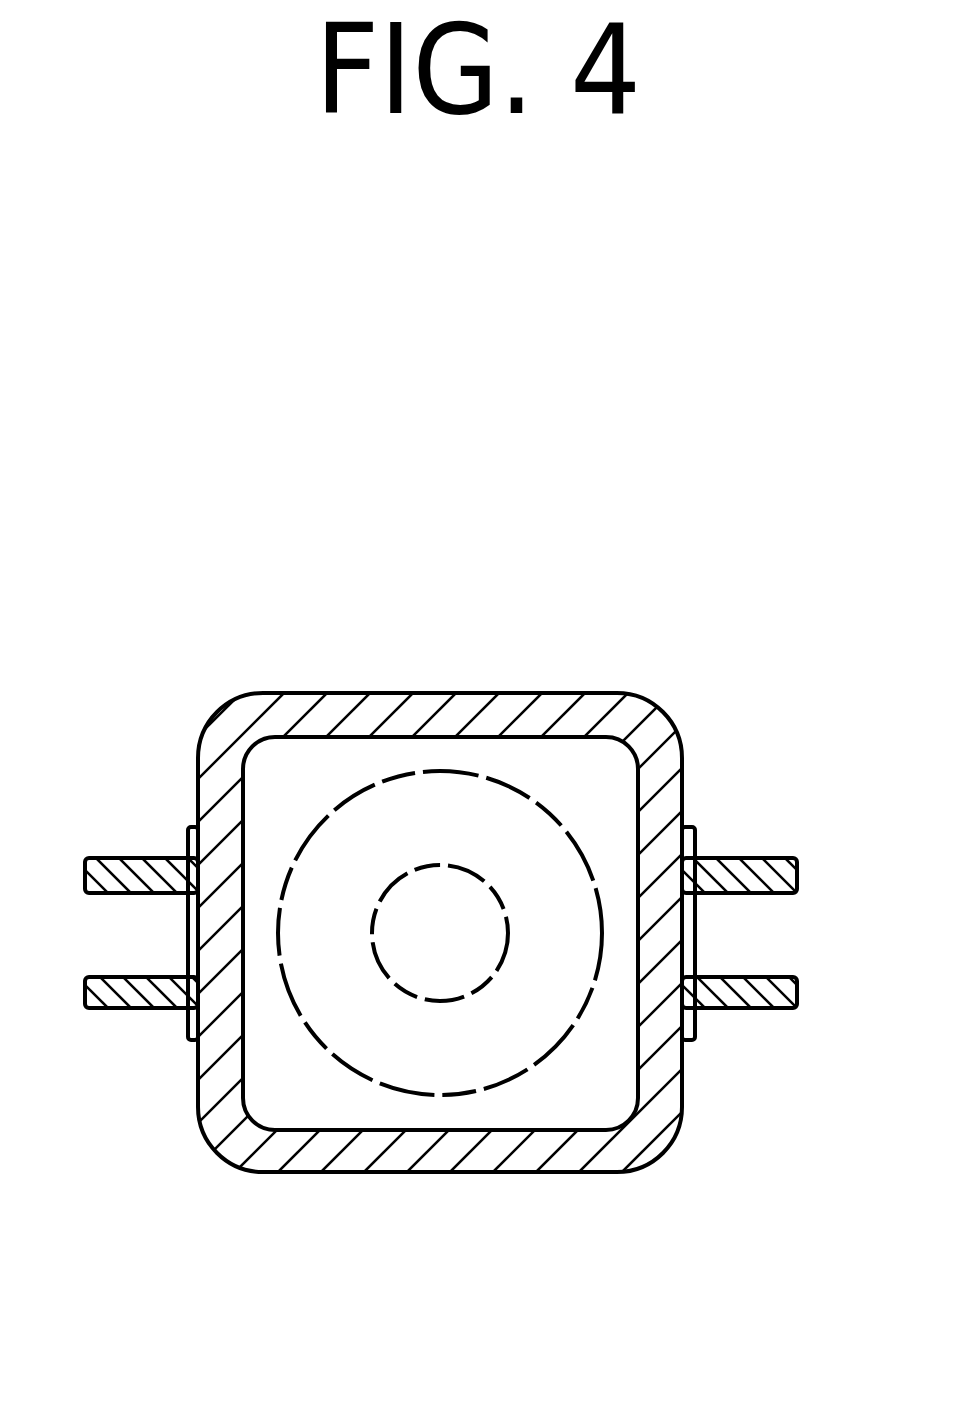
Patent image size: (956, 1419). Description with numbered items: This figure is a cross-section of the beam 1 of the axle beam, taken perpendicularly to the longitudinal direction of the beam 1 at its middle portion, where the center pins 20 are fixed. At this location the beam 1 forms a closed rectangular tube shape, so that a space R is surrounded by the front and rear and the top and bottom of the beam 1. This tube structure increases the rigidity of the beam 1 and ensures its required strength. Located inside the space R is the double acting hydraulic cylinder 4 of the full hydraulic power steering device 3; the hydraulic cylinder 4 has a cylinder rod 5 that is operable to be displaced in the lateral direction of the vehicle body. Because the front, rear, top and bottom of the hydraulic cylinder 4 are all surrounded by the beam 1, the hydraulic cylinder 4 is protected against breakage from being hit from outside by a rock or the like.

The beam 1 is at (463, 693).
The space R is at (607, 783).
The center pins 20 is at (97, 1008).
The full hydraulic power steering device 3 is at (533, 1077).
The cylinder rod 5 is at (417, 1000).
The hydraulic cylinder 4 is at (380, 1085).